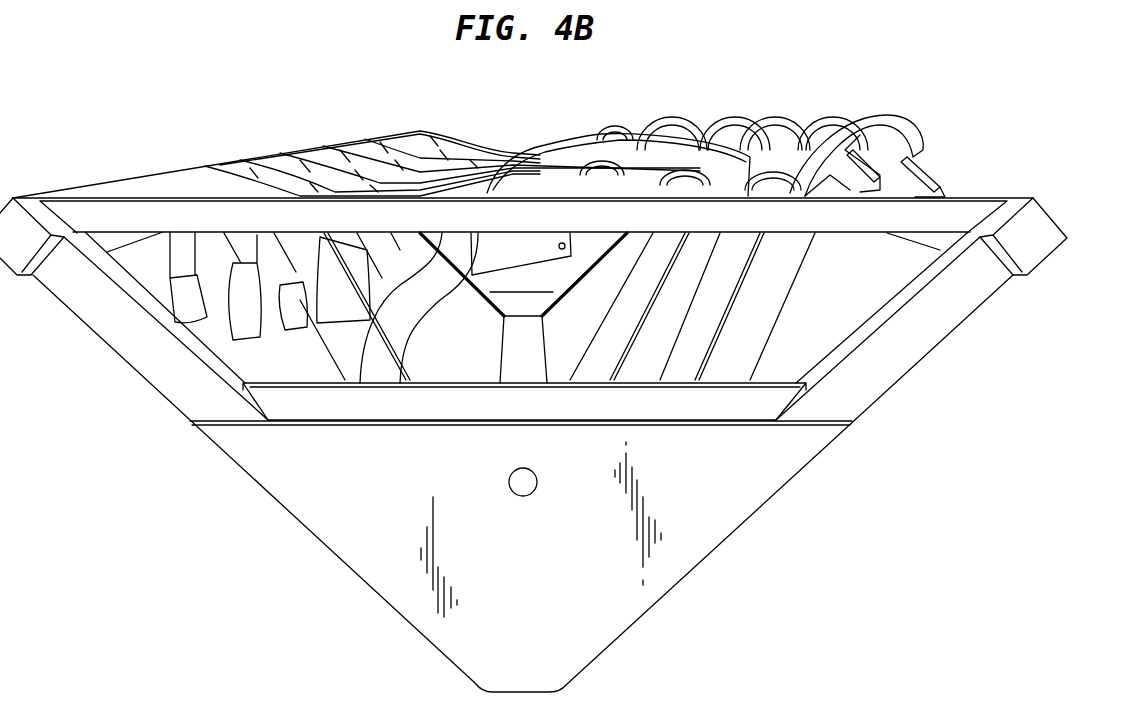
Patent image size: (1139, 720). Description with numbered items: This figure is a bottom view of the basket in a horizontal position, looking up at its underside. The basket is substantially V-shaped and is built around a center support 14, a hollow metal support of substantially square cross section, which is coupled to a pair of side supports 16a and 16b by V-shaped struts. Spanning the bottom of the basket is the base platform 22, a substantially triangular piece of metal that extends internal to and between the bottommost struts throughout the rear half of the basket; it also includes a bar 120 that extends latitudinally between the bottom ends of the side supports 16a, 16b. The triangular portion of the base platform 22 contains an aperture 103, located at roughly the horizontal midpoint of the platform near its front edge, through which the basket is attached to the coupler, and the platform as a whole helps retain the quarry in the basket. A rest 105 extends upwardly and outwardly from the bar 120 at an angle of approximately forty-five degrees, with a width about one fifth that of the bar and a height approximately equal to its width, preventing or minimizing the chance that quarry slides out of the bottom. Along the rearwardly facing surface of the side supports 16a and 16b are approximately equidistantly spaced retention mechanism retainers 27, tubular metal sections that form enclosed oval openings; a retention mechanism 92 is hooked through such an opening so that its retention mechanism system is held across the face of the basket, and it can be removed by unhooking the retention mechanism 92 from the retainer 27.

The bar 120 is at (244, 218).
The center support 14 is at (528, 244).
The rest 105 is at (508, 322).
The retention mechanism 92 is at (900, 117).
The retention mechanism retainer 27 is at (933, 170).
The side support 16a is at (117, 200).
The side support 16b is at (1047, 228).
The base platform 22 is at (468, 653).
The aperture 103 is at (530, 484).